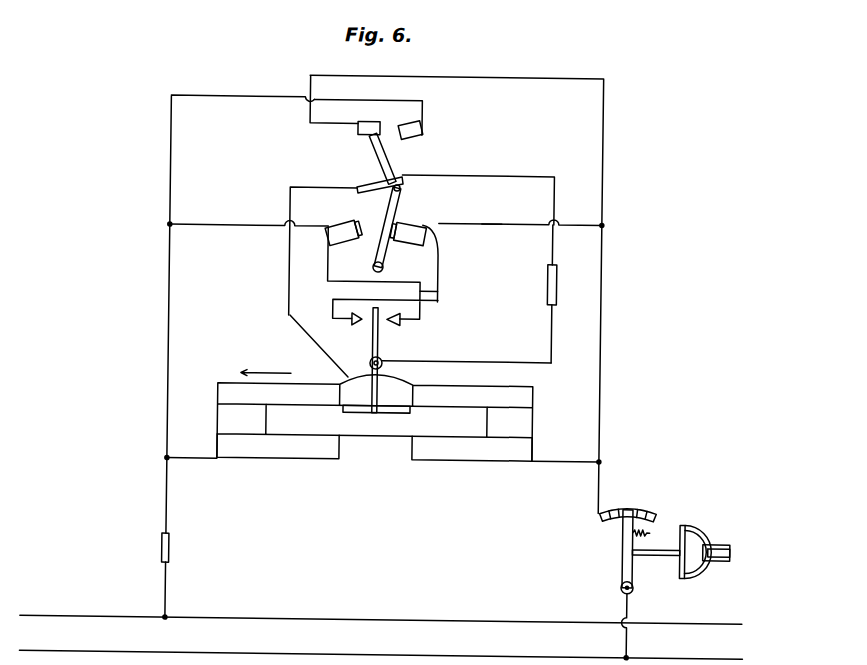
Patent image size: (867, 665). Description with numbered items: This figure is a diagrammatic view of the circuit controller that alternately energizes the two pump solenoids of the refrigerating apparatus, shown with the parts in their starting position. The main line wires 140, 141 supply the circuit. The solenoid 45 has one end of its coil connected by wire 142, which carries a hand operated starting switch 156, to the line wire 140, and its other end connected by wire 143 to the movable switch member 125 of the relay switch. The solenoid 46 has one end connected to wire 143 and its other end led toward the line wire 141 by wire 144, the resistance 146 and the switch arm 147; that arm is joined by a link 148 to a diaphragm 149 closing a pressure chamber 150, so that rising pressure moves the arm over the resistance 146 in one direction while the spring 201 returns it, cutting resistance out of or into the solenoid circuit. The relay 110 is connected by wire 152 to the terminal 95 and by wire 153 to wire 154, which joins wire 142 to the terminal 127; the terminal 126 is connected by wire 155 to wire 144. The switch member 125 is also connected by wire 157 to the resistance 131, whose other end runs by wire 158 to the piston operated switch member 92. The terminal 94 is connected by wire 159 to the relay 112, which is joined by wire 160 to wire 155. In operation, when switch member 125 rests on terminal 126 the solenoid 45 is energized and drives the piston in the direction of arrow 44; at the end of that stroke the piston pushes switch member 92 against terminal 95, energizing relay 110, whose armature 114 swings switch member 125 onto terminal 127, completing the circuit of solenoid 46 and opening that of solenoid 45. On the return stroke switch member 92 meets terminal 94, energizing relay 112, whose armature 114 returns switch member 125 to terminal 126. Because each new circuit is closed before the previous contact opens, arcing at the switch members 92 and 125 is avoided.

The arrow 44 is at (375, 404).
The solenoid 45 is at (274, 462).
The solenoid 46 is at (488, 461).
The switch member 92 is at (372, 348).
The terminal 94 is at (350, 327).
The terminal 95 is at (400, 327).
The relay 110 is at (325, 242).
The relay 112 is at (405, 240).
The armature 114 is at (385, 212).
The switch member 125 is at (367, 158).
The terminal member 126 is at (362, 122).
The terminal member 127 is at (422, 133).
The resistance 131 is at (546, 283).
The line wire 140 is at (78, 618).
The line wire 141 is at (76, 655).
The wire 142 is at (192, 468).
The wire 143 is at (289, 316).
The wire 144 is at (579, 478).
The resistance 146 is at (642, 502).
The switch arm 147 is at (624, 550).
The link 148 is at (654, 552).
The diaphragm 149 is at (692, 521).
The pressure chamber 150 is at (697, 561).
The wire 152 is at (325, 282).
The wire 153 is at (248, 237).
The wire 154 is at (174, 319).
The wire 155 is at (607, 348).
The starting switch 156 is at (172, 543).
The wire 157 is at (465, 174).
The wire 158 is at (495, 362).
The wire 159 is at (435, 296).
The wire 160 is at (493, 224).
The spring 201 is at (661, 540).